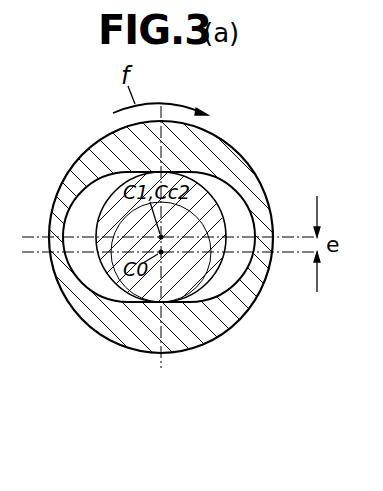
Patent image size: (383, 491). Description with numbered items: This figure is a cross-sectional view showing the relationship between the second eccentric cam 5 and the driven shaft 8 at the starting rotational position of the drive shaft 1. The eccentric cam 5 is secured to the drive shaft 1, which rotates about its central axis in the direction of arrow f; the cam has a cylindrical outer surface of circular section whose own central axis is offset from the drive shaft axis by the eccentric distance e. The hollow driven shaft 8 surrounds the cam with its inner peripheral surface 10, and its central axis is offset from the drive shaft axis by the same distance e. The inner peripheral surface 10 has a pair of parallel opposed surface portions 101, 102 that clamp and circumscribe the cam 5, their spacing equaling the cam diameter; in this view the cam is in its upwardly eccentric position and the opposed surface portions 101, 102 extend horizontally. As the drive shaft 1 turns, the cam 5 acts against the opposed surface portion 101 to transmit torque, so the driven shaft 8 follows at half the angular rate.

The drive shaft 1 is at (208, 262).
The eccentric cam 5 is at (100, 264).
The driven shaft 8 is at (243, 168).
The inner peripheral surface 10 is at (87, 193).
The opposed surface portion 101 is at (128, 305).
The opposed surface portion 102 is at (128, 164).